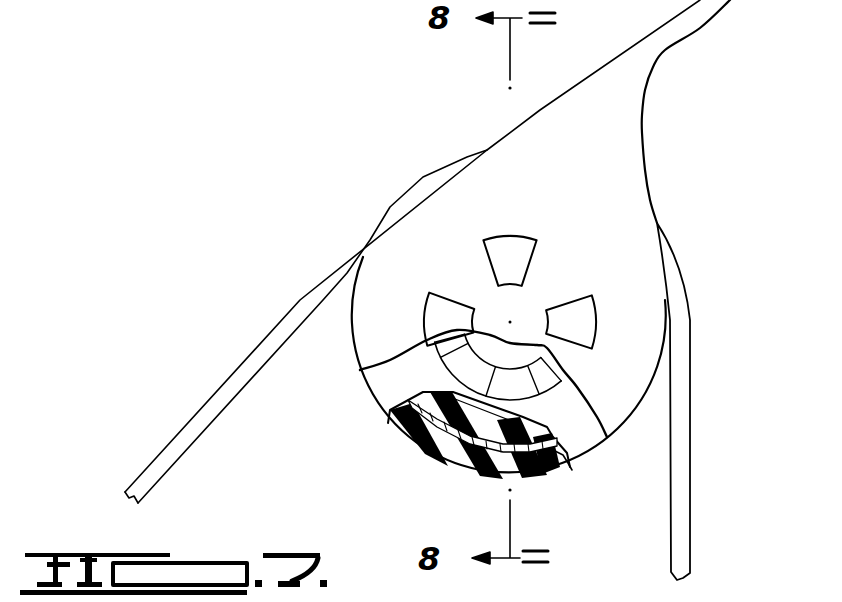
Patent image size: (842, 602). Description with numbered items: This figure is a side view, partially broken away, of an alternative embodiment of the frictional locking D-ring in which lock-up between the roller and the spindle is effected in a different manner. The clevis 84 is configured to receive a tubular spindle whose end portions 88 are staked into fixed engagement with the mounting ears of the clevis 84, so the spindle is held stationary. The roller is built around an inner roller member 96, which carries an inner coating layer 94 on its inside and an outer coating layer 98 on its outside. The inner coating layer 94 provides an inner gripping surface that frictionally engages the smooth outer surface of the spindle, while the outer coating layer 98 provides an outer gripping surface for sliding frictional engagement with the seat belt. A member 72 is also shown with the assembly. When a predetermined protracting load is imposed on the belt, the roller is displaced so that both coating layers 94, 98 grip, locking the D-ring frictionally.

The support leg 72 is at (680, 374).
The clevis 84 is at (627, 107).
The end portions 88 is at (586, 323).
The inner coating layer 94 is at (390, 424).
The inner roller member 96 is at (457, 443).
The outer coating layer 98 is at (540, 470).